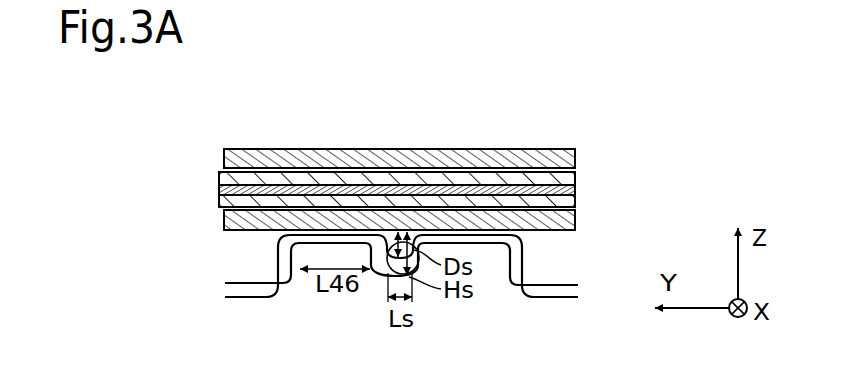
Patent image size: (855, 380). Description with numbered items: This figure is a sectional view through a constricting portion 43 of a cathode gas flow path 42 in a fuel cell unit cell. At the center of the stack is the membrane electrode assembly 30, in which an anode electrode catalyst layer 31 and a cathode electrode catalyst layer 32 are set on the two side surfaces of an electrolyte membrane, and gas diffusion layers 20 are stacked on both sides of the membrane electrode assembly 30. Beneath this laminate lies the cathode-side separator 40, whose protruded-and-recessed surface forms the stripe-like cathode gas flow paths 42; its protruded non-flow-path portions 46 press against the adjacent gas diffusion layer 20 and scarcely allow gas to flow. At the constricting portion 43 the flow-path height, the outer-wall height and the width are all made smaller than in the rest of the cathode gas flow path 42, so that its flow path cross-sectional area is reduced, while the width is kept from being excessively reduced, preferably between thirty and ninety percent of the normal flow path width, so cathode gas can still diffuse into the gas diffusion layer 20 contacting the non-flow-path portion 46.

The gas diffusion layer 20 is at (224, 160).
The membrane electrode assembly 30 is at (219, 190).
The anode electrode catalyst layer 31 is at (576, 176).
The cathode electrode catalyst layer 32 is at (576, 200).
The cathode-side separator 40 is at (225, 297).
The cathode gas flow path 42 is at (263, 275).
The constricting portion 43 is at (392, 270).
The non-flow-path portion 46 is at (333, 232).